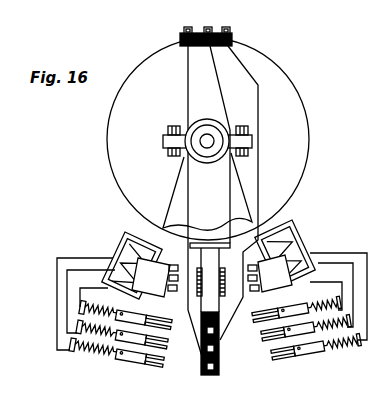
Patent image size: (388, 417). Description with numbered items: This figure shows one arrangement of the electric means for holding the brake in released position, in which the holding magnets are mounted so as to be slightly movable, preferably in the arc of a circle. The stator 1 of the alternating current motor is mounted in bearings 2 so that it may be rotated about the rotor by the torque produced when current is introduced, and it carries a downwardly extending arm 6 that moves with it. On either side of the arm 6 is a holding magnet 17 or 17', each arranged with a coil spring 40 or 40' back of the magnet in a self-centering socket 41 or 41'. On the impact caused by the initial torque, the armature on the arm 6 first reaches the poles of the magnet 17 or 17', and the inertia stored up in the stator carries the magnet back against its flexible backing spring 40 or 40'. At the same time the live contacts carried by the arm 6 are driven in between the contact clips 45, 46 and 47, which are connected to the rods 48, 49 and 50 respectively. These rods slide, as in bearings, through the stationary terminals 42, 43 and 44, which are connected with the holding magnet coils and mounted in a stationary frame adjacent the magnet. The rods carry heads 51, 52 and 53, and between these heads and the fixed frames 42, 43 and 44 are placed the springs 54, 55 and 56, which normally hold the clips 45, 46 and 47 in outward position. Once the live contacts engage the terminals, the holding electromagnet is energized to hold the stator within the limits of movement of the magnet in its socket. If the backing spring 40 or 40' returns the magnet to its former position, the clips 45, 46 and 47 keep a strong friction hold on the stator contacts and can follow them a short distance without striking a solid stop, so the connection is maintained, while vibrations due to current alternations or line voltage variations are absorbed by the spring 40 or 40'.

The stator 1 is at (287, 97).
The bearing 2 is at (384, 75).
The arm 6 is at (210, 296).
The holding magnet 17 is at (132, 253).
The holding magnet 17' is at (285, 246).
The coil spring 40 is at (129, 263).
The coil spring 40' is at (297, 254).
The self-centering socket 41 is at (80, 295).
The self-centering socket 41' is at (338, 285).
The terminal 42 is at (130, 320).
The terminal 43 is at (125, 340).
The terminal 44 is at (123, 358).
The contact clip 45 is at (148, 311).
The contact clip 46 is at (162, 340).
The contact clip 47 is at (158, 360).
The rod 48 is at (100, 304).
The rod 49 is at (79, 313).
The rod 50 is at (82, 352).
The head 51 is at (82, 311).
The head 52 is at (77, 329).
The head 53 is at (70, 348).
The spring 54 is at (111, 309).
The spring 55 is at (72, 339).
The spring 56 is at (93, 357).